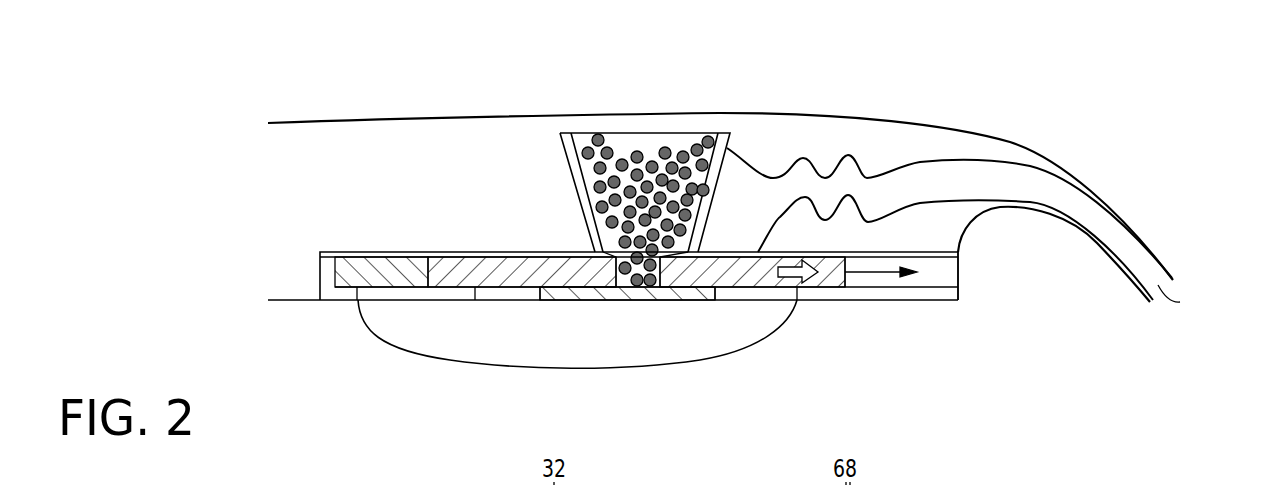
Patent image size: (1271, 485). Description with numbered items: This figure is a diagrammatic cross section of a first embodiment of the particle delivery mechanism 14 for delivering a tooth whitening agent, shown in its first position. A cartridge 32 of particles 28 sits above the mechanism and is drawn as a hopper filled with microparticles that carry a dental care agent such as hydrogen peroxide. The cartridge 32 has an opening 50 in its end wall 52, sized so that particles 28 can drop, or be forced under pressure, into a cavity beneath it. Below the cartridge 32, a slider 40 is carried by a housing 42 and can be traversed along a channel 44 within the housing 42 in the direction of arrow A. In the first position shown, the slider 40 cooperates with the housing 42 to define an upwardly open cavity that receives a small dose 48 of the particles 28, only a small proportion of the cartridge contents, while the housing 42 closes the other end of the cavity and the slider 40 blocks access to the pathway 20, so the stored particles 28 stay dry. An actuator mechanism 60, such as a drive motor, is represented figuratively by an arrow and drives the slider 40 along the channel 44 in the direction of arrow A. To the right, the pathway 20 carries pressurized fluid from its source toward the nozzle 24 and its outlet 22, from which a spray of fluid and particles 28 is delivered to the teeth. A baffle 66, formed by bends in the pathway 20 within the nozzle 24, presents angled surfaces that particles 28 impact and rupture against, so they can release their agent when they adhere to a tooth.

The particle delivery mechanism 14 is at (463, 233).
The pathway 20 is at (870, 200).
The outlet 22 is at (1180, 302).
The nozzle 24 is at (1105, 197).
The particles 28 is at (665, 150).
The cartridge 32 is at (580, 137).
The slider 40 is at (520, 280).
The housing 42 is at (475, 300).
The channel 44 is at (943, 272).
The dose 48 is at (643, 295).
The opening 50 is at (613, 252).
The end wall 52 is at (688, 250).
The actuator mechanism 60 is at (797, 283).
The baffle 66 is at (825, 178).
The arrow A is at (885, 272).